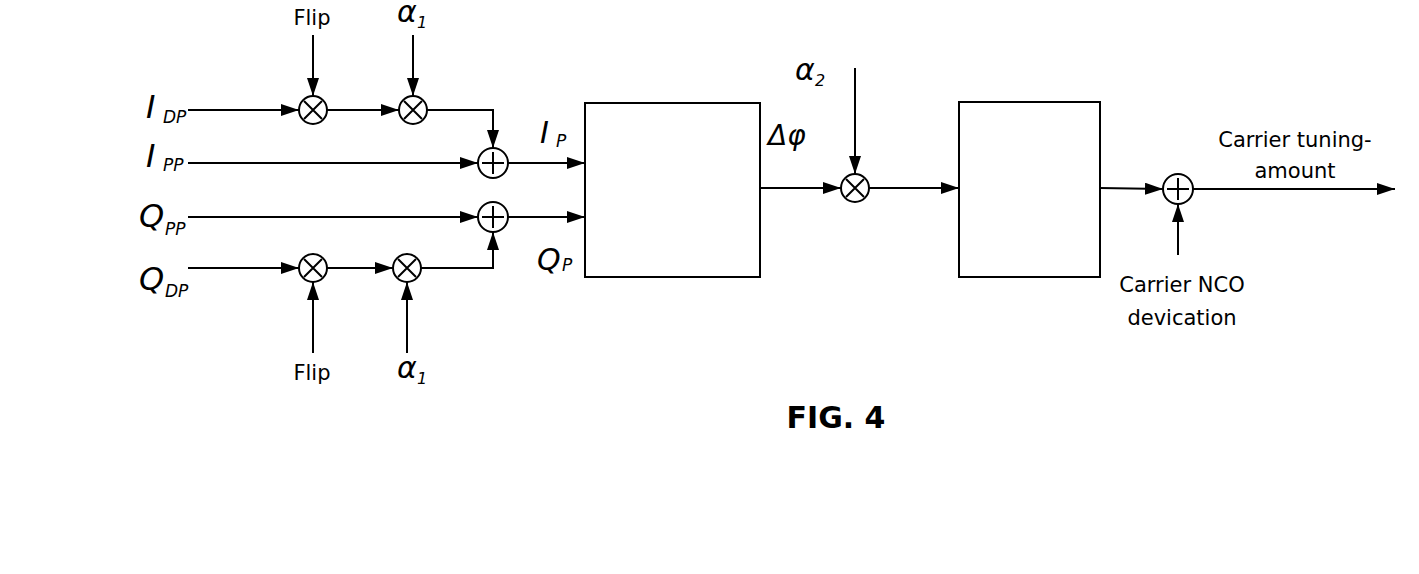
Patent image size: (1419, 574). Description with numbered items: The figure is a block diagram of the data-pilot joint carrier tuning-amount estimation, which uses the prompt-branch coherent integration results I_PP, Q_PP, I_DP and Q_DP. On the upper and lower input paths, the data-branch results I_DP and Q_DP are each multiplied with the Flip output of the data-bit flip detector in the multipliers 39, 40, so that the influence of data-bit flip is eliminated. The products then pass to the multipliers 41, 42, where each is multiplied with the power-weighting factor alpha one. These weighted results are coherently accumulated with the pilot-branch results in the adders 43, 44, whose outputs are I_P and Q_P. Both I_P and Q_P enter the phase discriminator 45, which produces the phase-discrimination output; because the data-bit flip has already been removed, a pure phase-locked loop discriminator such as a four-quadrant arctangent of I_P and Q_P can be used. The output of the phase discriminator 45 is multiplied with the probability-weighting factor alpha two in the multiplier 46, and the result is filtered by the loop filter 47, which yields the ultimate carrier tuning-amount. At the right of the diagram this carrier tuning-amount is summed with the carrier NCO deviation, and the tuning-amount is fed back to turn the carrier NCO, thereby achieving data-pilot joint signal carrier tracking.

The multiplier 39 is at (311, 126).
The multiplier 40 is at (301, 258).
The multiplier 41 is at (401, 98).
The multiplier 42 is at (419, 274).
The adder 43 is at (498, 150).
The adder 44 is at (505, 231).
The phase discriminator 45 is at (672, 277).
The multiplier 46 is at (851, 203).
The loop filter 47 is at (1030, 277).